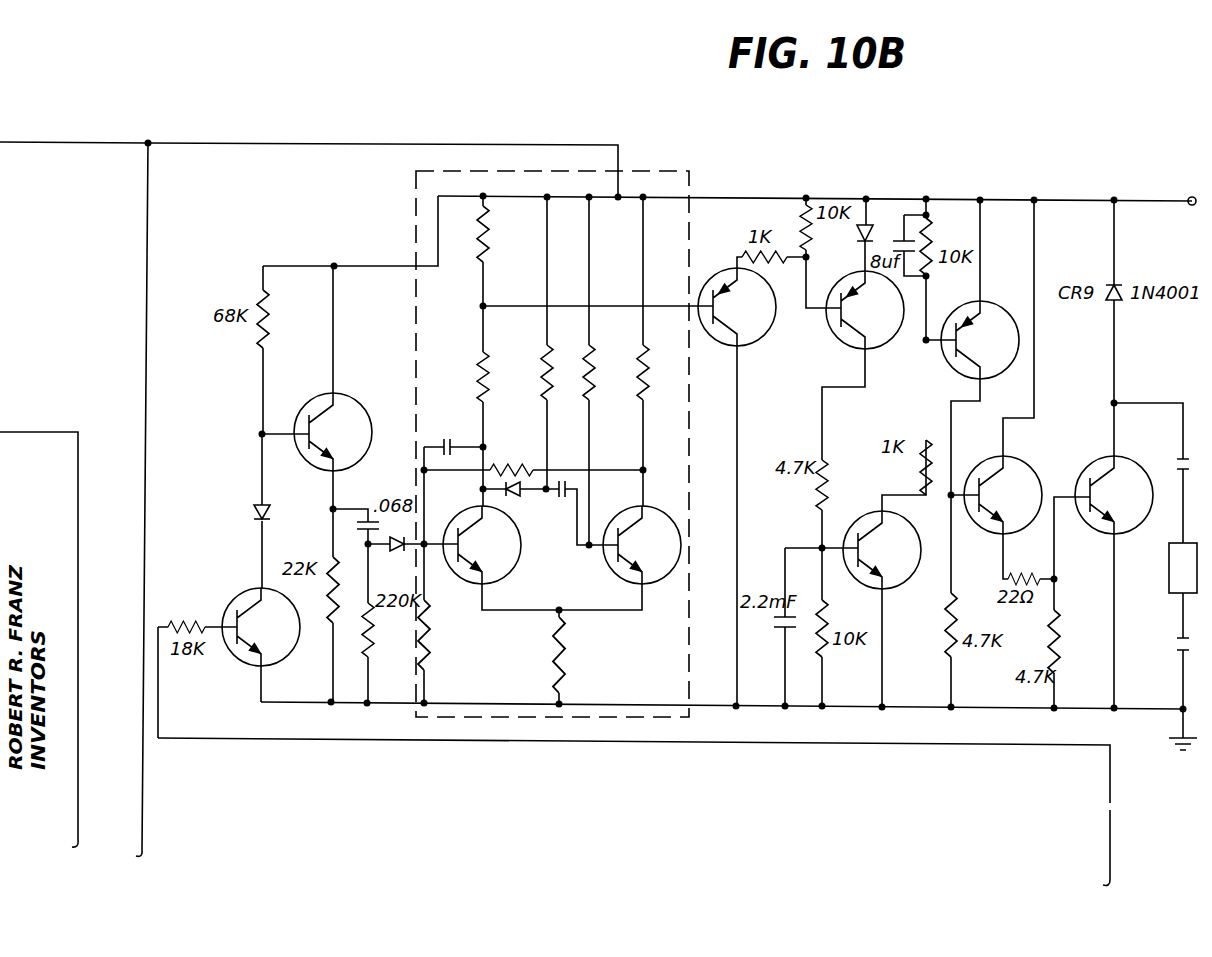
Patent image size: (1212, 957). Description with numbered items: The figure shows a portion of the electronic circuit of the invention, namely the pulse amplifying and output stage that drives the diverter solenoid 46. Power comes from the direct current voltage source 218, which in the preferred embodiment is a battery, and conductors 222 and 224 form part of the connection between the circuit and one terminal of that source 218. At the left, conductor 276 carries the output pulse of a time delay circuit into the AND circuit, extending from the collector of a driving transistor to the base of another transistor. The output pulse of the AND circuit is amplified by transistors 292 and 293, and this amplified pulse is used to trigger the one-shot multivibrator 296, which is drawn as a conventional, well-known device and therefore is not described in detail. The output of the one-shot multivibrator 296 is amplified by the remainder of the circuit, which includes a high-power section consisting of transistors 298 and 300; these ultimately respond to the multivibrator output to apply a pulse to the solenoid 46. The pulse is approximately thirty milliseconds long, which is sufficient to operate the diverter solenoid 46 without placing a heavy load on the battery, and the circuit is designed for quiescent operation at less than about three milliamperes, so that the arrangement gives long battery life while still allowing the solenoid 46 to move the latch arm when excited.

The conductor 222 is at (455, 100).
The conductor 224 is at (778, 198).
The direct current voltage source 218 is at (1192, 197).
The conductor 276 is at (45, 432).
The transistor 292 is at (246, 594).
The transistor 293 is at (375, 387).
The one-shot multivibrator 296 is at (652, 168).
The transistor 298 is at (1050, 450).
The transistor 300 is at (1170, 449).
The solenoid 46 is at (1176, 578).